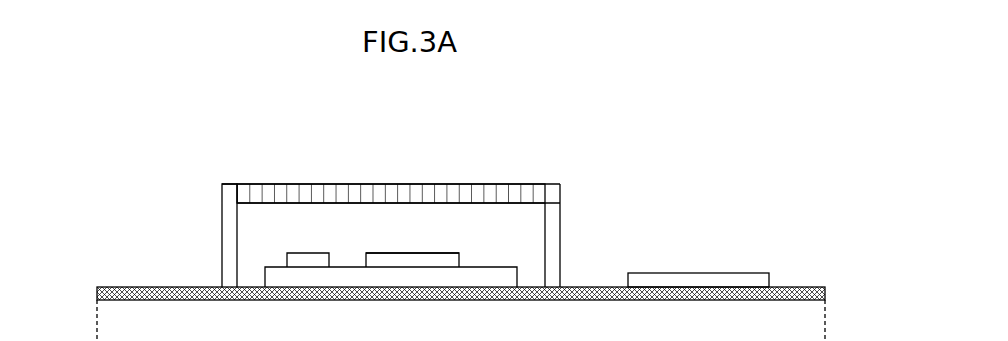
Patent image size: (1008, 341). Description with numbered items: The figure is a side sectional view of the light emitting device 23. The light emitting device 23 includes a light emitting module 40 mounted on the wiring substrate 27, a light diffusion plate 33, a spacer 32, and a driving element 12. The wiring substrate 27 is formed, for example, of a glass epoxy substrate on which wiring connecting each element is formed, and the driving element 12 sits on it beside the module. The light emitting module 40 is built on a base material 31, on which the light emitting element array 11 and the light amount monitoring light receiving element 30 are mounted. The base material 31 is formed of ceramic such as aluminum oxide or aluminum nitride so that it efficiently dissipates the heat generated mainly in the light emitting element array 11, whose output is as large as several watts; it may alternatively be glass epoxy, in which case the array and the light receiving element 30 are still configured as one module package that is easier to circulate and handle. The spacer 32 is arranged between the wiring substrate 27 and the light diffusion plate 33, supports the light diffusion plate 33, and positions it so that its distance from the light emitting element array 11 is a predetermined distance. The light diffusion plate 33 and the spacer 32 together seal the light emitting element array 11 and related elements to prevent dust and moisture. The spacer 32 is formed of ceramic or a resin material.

The light emitting element array 11 is at (413, 253).
The driving element 12 is at (752, 279).
The light emitting device 23 is at (432, 200).
The wiring substrate 27 is at (825, 292).
The light amount monitoring light receiving element 30 is at (308, 253).
The base material 31 is at (487, 277).
The spacer 32 is at (222, 241).
The light diffusion plate 33 is at (385, 184).
The light emitting module 40 is at (382, 242).